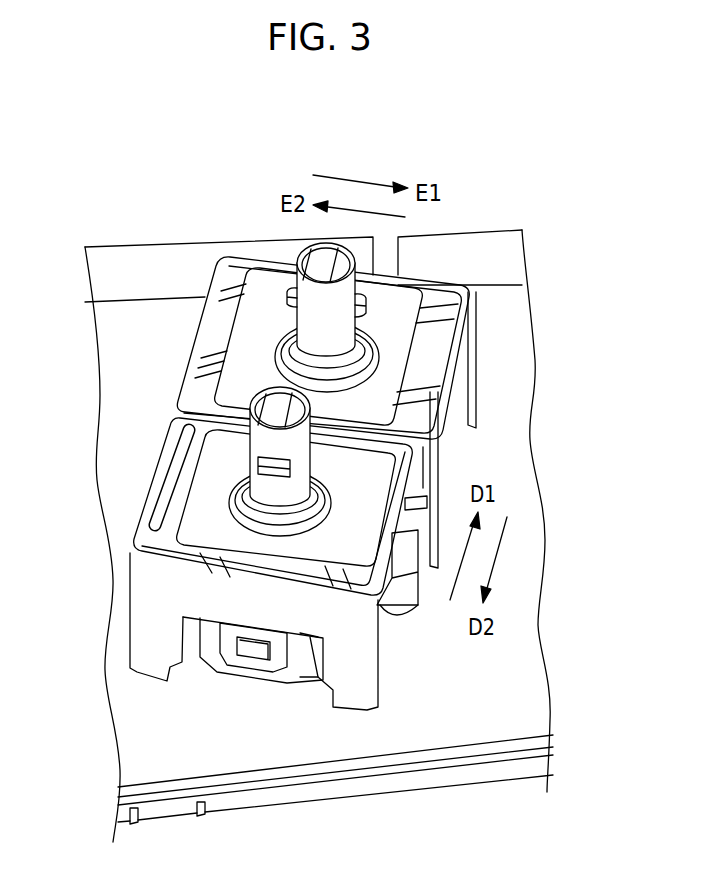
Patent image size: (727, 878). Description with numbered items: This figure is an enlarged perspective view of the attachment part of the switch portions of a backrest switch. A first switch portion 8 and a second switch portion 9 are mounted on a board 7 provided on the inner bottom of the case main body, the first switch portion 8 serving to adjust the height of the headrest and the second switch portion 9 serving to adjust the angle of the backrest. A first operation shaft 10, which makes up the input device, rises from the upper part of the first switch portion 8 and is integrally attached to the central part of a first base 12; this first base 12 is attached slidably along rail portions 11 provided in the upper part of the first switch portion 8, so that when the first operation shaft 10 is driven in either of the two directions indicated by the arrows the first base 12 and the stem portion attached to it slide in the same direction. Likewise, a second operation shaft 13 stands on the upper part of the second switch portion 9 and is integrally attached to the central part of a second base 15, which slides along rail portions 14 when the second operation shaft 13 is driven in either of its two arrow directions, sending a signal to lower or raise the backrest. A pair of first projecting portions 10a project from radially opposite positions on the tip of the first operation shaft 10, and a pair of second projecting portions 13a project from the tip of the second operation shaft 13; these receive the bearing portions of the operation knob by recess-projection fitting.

The board 7 is at (508, 431).
The first switch portion 8 is at (200, 485).
The second switch portion 9 is at (222, 308).
The first operation shaft 10 is at (258, 443).
The first projecting portions 10a is at (267, 477).
The rail portions 11 is at (210, 563).
The first base 12 is at (188, 522).
The second operation shaft 13 is at (305, 336).
The second projecting portions 13a is at (291, 288).
The rail portions 14 is at (437, 313).
The second base 15 is at (387, 360).